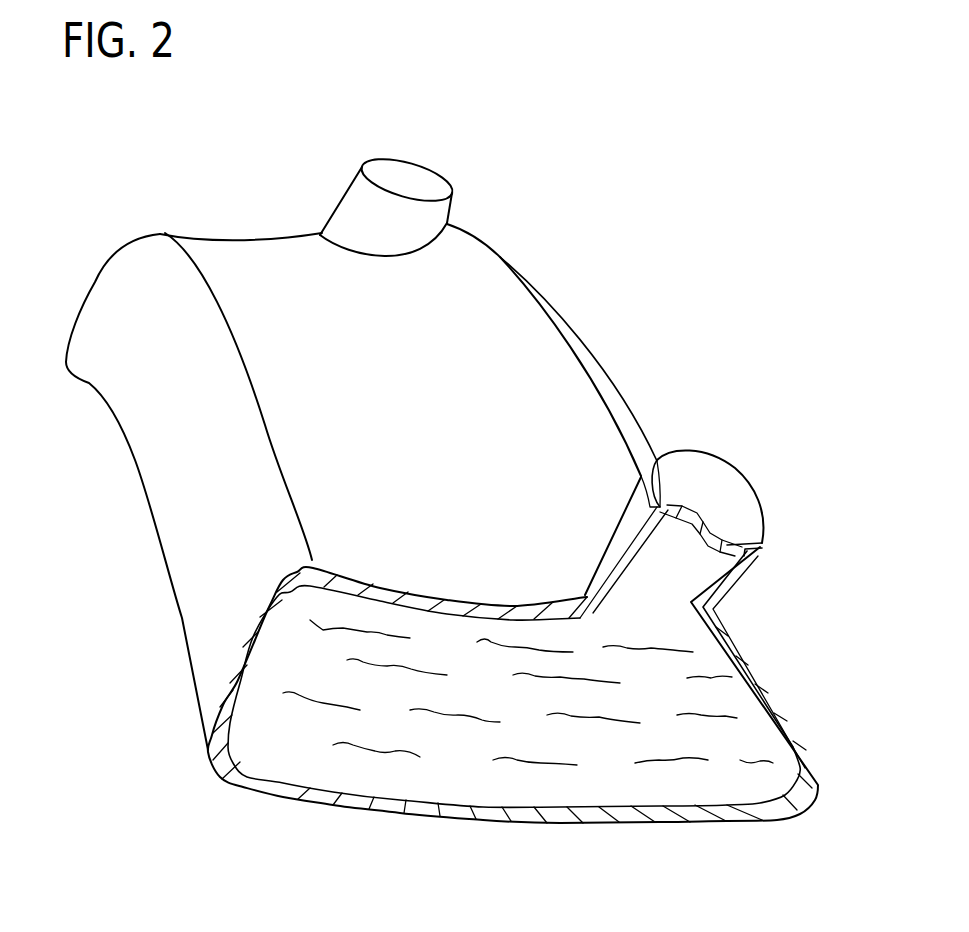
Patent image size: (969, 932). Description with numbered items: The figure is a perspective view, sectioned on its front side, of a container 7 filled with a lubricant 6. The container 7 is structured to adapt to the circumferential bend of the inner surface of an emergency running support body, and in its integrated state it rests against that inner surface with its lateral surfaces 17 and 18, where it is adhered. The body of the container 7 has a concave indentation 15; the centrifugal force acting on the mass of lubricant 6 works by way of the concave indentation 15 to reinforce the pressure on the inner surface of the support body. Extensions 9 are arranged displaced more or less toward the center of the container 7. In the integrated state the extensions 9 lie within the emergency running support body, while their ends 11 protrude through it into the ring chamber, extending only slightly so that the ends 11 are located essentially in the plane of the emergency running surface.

The lubricant 6 is at (565, 732).
The container 7 is at (648, 315).
The extensions 9 is at (460, 178).
The ends 11 is at (397, 178).
The concave indentation 15 is at (412, 388).
The lateral surface 17 is at (200, 537).
The lateral surface 18 is at (648, 432).